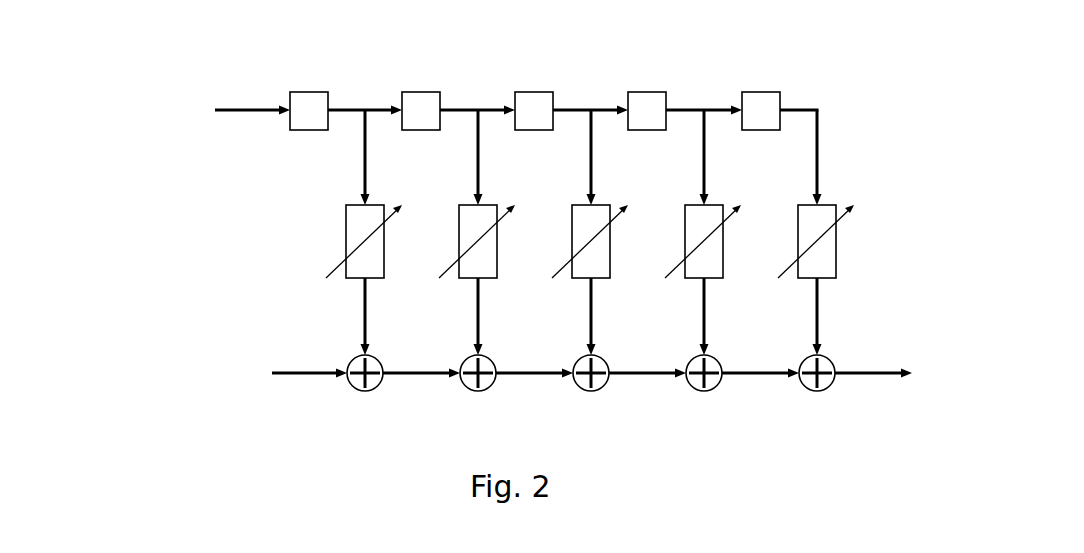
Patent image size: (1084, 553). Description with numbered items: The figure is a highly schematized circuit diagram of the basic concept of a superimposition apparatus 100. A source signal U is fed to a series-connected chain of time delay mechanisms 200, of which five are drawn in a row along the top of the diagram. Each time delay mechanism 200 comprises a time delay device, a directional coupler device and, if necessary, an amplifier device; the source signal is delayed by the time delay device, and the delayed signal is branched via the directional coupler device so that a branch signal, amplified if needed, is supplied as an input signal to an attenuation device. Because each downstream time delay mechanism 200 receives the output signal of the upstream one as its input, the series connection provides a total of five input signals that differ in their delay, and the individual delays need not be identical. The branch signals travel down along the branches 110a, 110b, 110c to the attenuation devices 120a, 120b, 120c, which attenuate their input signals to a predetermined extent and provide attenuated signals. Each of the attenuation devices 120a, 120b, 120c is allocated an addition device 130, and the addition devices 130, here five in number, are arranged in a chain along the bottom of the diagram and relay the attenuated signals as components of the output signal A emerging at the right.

The superimposition apparatus 100 is at (213, 194).
The time delay mechanism 200 is at (298, 90).
The first tap signal path 110a is at (362, 185).
The second tap signal path 110b is at (475, 185).
The third tap signal path 110c is at (588, 185).
The attenuation device 120a is at (355, 278).
The attenuation device 120b is at (470, 278).
The attenuation device 120c is at (587, 278).
The addition device 130 is at (352, 389).